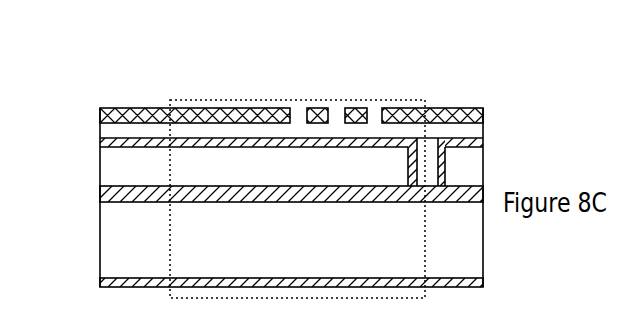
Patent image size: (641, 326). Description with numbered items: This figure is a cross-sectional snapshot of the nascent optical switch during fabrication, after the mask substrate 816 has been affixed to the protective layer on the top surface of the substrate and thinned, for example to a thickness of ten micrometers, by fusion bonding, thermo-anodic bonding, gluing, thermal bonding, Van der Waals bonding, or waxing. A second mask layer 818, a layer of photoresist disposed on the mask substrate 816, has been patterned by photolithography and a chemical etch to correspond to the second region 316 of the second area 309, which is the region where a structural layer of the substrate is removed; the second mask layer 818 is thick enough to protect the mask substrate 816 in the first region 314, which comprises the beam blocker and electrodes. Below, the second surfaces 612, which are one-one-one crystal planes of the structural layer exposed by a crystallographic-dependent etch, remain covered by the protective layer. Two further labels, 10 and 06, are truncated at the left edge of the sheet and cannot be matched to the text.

The mask substrate 816 is at (99, 125).
The second area 309 is at (197, 100).
The first region 314 is at (313, 108).
The second region 316 is at (377, 108).
The second mask layer 818 is at (455, 108).
The second surfaces 612 is at (445, 167).
The conductive layer 10 is at (248, 194).
The substrate 06 is at (245, 244).